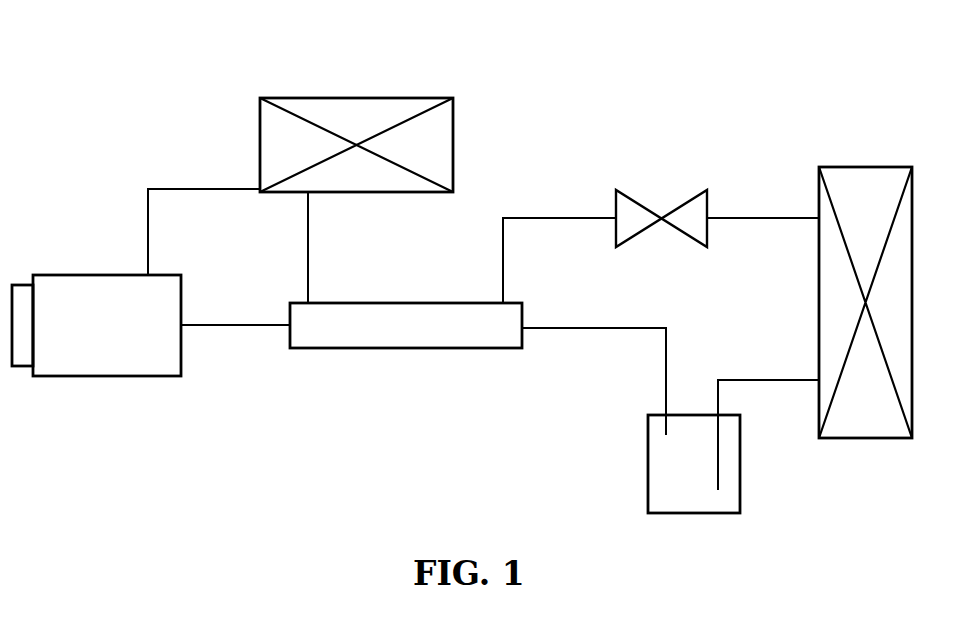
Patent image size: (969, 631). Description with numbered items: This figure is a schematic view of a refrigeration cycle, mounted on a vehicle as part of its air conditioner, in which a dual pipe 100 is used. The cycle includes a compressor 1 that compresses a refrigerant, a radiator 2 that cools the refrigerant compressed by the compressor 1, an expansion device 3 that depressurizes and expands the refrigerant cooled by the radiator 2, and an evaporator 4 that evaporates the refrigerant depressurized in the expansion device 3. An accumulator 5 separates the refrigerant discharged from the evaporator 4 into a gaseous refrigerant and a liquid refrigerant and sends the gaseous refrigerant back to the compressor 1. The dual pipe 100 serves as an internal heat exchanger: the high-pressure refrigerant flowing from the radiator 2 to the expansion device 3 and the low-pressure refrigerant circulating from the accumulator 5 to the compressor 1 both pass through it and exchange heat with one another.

The compressor 1 is at (143, 378).
The radiator 2 is at (330, 98).
The expansion device 3 is at (631, 195).
The evaporator 4 is at (863, 167).
The accumulator 5 is at (648, 430).
The dual pipe 100 is at (413, 348).